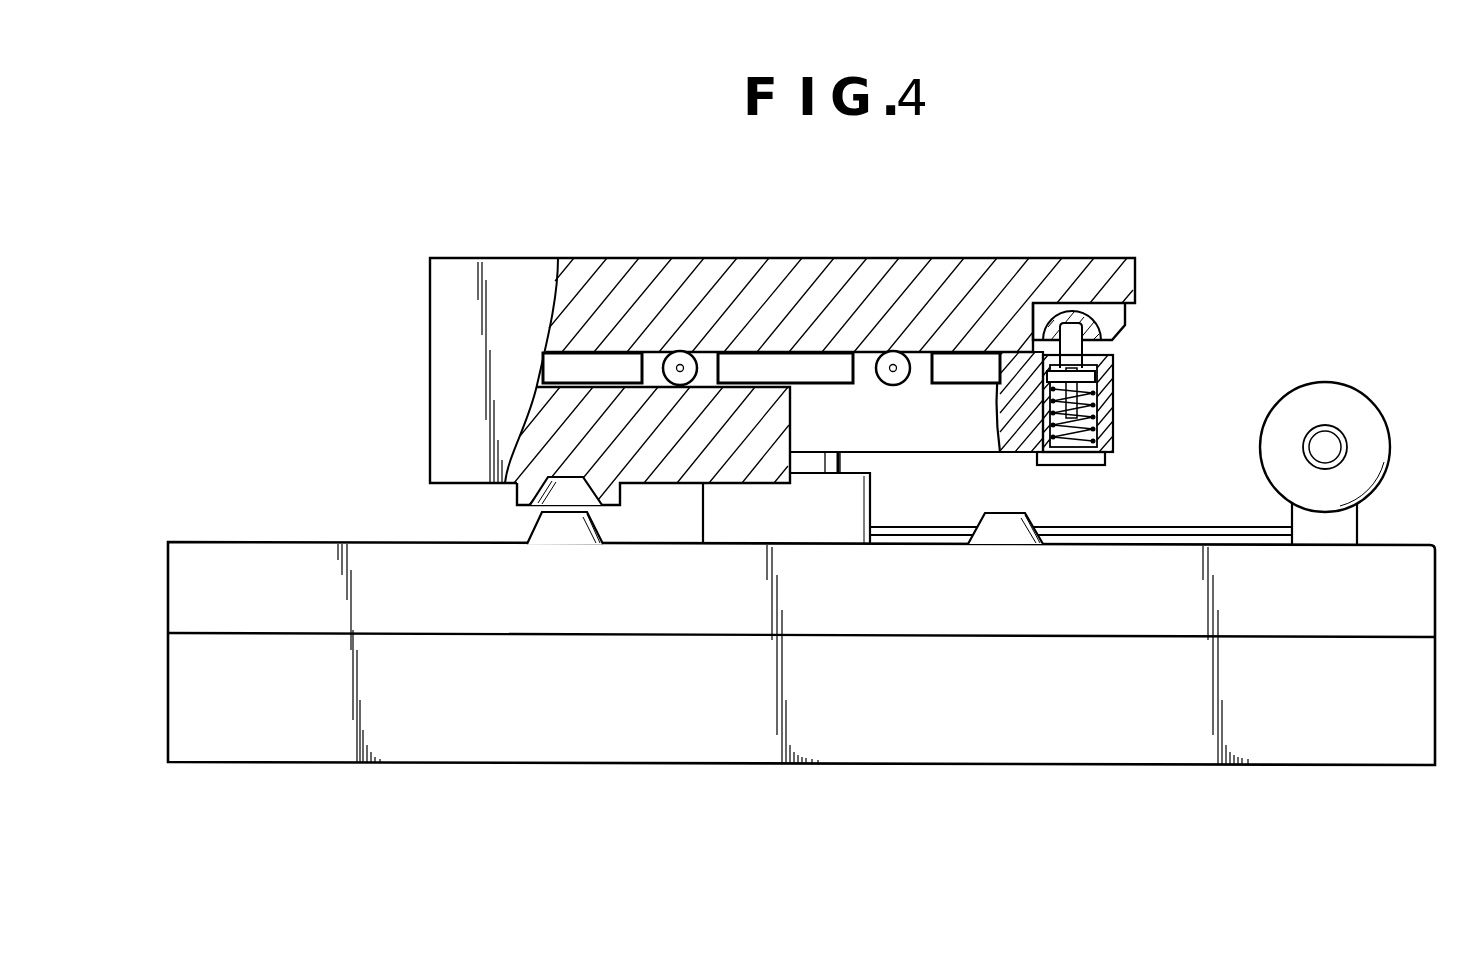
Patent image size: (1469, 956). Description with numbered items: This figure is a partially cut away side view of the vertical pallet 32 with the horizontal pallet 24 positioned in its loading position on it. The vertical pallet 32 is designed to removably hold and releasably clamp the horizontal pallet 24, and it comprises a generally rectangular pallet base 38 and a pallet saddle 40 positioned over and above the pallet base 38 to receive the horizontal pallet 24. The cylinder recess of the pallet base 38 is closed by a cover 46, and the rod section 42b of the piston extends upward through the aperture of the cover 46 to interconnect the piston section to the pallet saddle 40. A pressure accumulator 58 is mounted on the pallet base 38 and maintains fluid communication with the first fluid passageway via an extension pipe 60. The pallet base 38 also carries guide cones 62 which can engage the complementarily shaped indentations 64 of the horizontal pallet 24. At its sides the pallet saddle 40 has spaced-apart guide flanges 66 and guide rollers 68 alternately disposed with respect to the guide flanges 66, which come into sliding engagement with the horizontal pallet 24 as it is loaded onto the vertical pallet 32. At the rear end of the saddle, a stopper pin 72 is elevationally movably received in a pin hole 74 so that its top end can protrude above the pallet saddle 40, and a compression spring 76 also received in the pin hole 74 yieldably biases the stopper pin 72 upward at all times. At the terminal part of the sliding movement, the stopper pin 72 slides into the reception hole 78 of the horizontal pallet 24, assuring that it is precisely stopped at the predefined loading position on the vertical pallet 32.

The vertical pallet 32 is at (349, 542).
The pallet base 38 is at (641, 752).
The cover 46 is at (832, 543).
The rod section 42b is at (848, 466).
The extension pipe 60 is at (1200, 541).
The guide cones 62 is at (597, 529).
The pressure accumulator 58 is at (1357, 400).
The horizontal pallet 24 is at (510, 280).
The pallet saddle 40 is at (813, 403).
The indentations 64 is at (542, 501).
The guide flanges 66 is at (732, 367).
The guide rollers 68 is at (896, 352).
The reception hole 78 is at (1068, 328).
The stopper pin 72 is at (1088, 351).
The pin hole 74 is at (1105, 418).
The compression spring 76 is at (1073, 437).